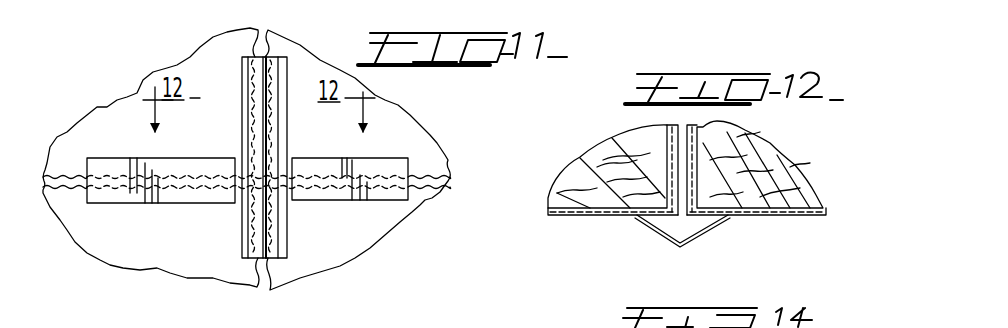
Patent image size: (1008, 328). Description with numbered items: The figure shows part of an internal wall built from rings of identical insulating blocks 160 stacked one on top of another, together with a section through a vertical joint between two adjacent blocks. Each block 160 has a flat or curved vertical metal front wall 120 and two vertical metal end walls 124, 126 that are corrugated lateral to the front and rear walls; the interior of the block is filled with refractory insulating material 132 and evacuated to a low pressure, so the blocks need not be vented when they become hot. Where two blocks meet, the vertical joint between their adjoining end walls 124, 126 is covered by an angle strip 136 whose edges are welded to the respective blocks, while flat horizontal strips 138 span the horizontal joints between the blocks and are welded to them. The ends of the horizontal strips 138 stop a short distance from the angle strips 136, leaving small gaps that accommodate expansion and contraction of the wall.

In FIG. 11, the metal front wall 120 is at (112, 227).
In FIG. 12, the metal front wall 120 is at (597, 212).
In FIG. 12, the metal end wall 124 is at (700, 148).
In FIG. 12, the metal end wall 126 is at (677, 150).
In FIG. 12, the refractory insulating material 132 is at (787, 167).
In FIG. 11, the angle strip 136 is at (280, 70).
In FIG. 12, the angle strip 136 is at (706, 231).
In FIG. 11, the horizontal strip 138 is at (103, 158).
In FIG. 12, the horizontal strip 138 is at (560, 215).
In FIG. 11, the insulating block 160 is at (165, 277).